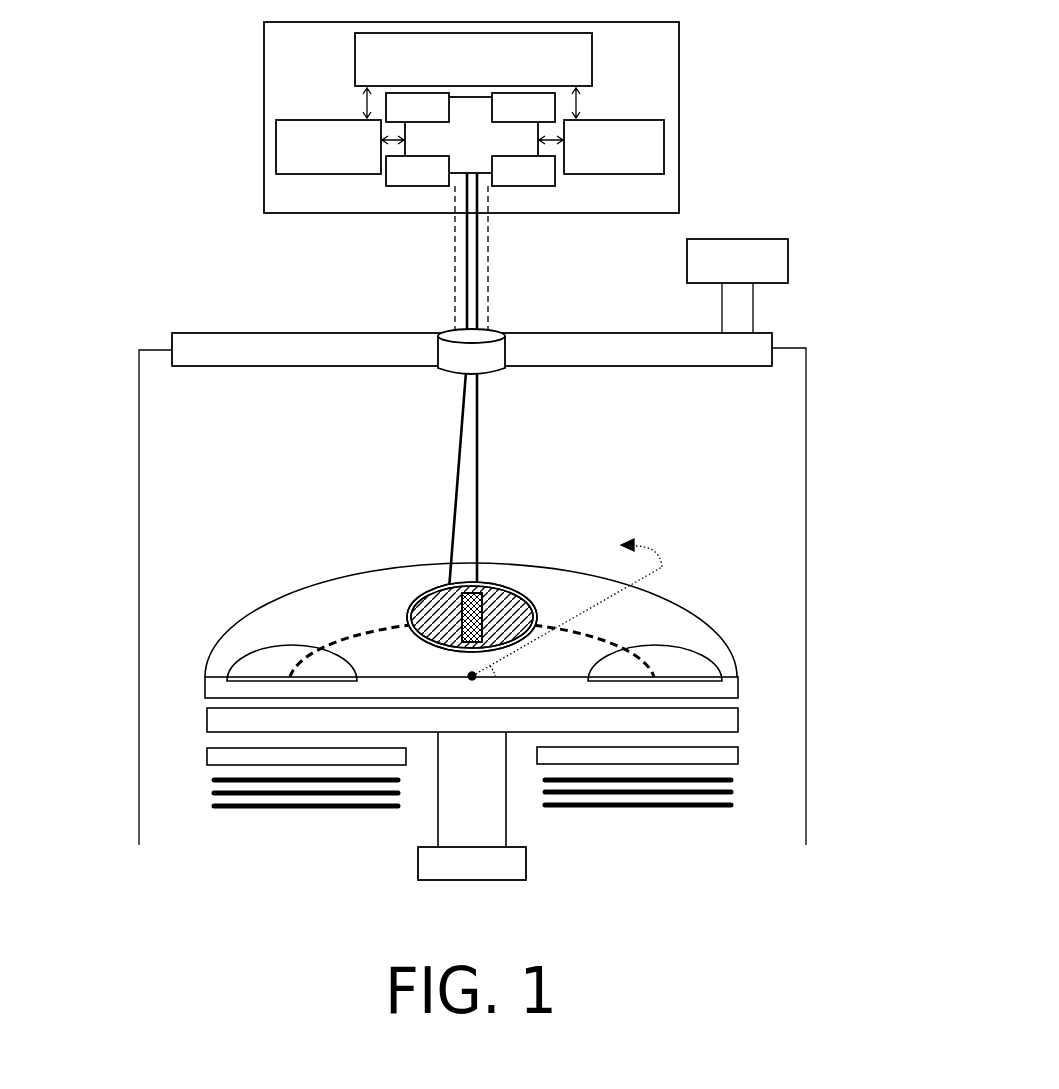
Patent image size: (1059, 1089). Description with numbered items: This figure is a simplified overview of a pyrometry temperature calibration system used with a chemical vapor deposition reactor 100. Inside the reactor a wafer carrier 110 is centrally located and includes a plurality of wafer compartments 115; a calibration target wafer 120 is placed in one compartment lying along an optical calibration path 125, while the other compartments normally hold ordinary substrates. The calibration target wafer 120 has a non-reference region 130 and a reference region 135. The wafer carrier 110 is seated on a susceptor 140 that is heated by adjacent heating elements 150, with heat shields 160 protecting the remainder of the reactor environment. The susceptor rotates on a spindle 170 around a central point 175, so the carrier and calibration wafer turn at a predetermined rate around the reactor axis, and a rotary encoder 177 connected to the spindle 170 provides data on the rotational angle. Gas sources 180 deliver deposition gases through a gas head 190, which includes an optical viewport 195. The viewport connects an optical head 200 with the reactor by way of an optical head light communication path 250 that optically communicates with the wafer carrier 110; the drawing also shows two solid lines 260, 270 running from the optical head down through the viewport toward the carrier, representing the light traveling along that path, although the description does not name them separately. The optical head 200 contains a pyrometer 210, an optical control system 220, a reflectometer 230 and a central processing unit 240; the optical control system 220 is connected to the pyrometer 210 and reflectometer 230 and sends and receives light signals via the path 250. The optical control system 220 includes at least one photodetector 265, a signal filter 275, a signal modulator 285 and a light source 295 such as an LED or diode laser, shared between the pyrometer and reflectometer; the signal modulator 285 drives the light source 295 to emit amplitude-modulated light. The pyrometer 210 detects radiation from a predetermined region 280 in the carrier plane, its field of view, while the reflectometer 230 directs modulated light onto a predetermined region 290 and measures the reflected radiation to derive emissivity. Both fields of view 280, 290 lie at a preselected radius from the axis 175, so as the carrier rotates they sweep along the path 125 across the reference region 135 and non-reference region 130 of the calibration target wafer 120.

The chemical vapor deposition reactor 100 is at (806, 565).
The wafer carrier 110 is at (227, 633).
The wafer compartments 115 is at (440, 583).
The calibration target wafer 120 is at (527, 607).
The optical calibration path 125 is at (318, 643).
The non-reference region 130 is at (503, 607).
The reference region 135 is at (495, 637).
The susceptor 140 is at (207, 723).
The heating elements 150 is at (207, 750).
The heat shields 160 is at (214, 787).
The spindle 170 is at (472, 789).
The central point 175 is at (472, 676).
The rotary encoder 177 is at (472, 863).
The gas sources 180 is at (737, 286).
The gas head 190 is at (595, 367).
The optical viewport 195 is at (456, 372).
The optical head 200 is at (679, 72).
The pyrometer 210 is at (328, 147).
The optical control system 220 is at (471, 135).
The reflectometer 230 is at (614, 147).
The central processing unit 240 is at (473, 59).
The optical head light communication path 250 is at (488, 278).
The illumination beam 260 is at (467, 255).
The photodetector 265 is at (417, 171).
The reflected beam 270 is at (478, 256).
The signal filter 275 is at (417, 107).
The field of view of the pyrometer 280 is at (417, 618).
The signal modulator 285 is at (523, 107).
The field of view of the reflectometer 290 is at (463, 642).
The light source 295 is at (523, 171).